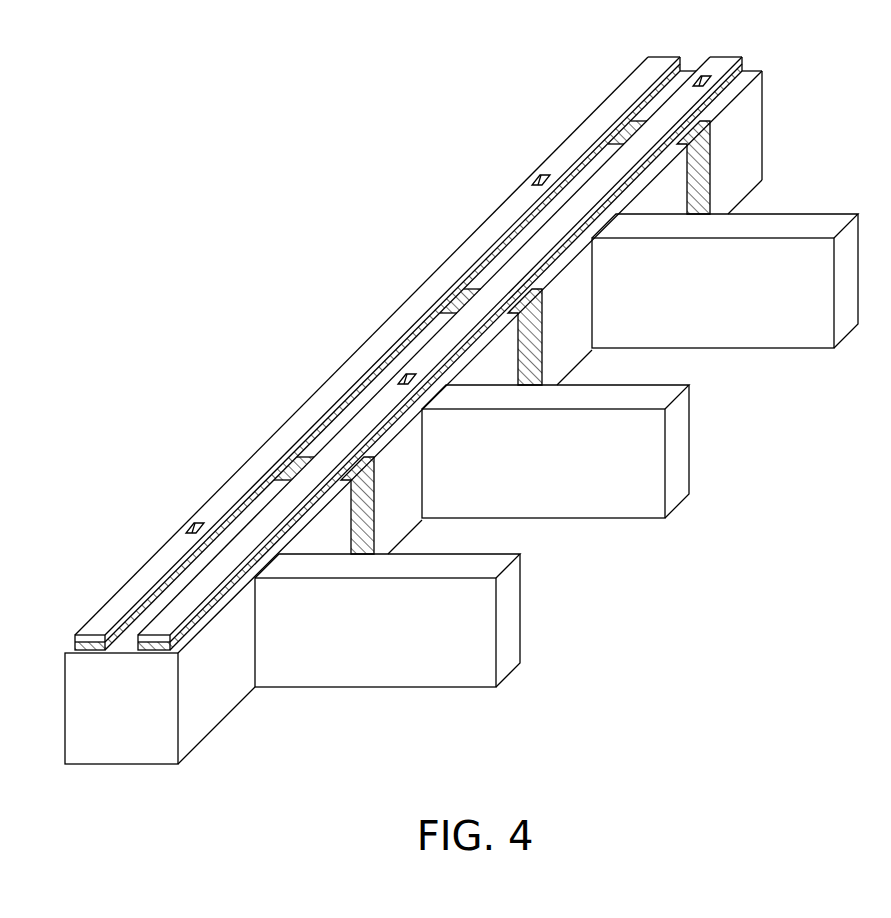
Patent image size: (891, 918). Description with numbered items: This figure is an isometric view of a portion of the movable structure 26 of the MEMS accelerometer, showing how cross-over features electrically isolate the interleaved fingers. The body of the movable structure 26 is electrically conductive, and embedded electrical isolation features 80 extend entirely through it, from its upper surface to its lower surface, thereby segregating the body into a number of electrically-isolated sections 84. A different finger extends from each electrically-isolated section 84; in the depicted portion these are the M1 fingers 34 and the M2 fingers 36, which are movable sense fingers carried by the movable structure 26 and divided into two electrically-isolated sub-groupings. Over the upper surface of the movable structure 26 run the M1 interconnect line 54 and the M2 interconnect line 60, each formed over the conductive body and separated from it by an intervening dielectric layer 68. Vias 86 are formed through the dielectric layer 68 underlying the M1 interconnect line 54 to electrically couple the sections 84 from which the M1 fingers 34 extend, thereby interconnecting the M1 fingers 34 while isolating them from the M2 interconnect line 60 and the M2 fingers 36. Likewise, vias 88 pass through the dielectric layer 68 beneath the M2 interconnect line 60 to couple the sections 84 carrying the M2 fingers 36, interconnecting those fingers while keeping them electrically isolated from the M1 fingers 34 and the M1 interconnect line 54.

The movable structure 26 is at (312, 170).
The M1 fingers 34 is at (462, 653).
The M2 fingers 36 is at (597, 491).
The M1 interconnect line 54 is at (336, 386).
The M2 interconnect line 60 is at (527, 258).
The dielectric layer 68 is at (119, 643).
The embedded electrical isolation features 80 is at (706, 160).
The electrically-isolated sections 84 is at (744, 182).
The vias 86 is at (536, 179).
The vias 88 is at (700, 79).